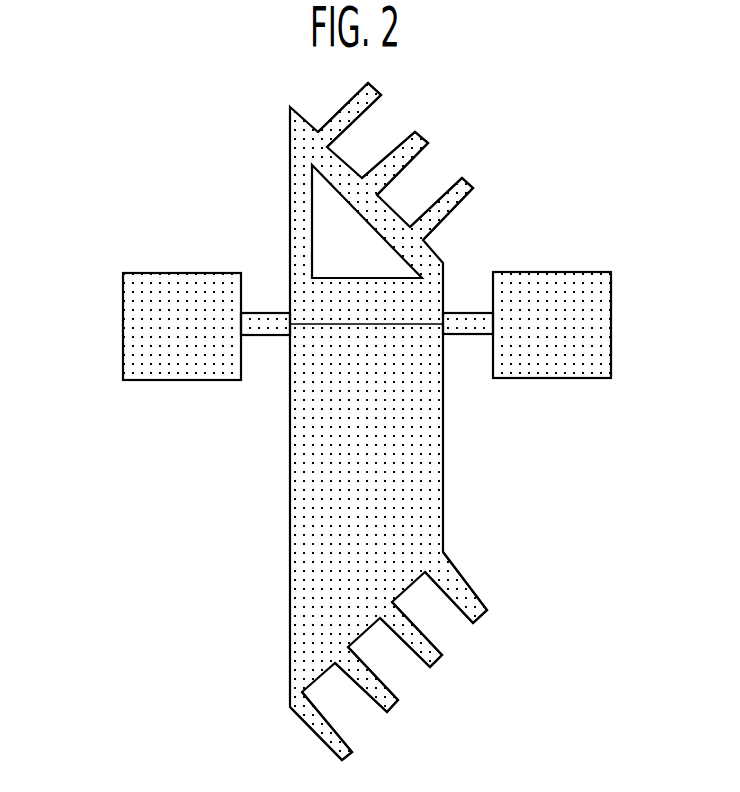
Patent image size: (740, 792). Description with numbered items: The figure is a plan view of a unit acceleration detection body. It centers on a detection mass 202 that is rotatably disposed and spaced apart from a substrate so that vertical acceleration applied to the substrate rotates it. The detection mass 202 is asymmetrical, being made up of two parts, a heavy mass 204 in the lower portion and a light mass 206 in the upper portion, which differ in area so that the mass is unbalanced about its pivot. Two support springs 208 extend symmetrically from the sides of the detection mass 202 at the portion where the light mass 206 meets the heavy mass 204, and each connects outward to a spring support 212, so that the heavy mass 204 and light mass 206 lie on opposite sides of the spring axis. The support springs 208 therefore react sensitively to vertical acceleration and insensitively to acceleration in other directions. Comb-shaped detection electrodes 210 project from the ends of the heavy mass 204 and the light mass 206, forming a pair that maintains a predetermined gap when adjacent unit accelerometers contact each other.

The detection mass 202 is at (280, 447).
The heavy mass 204 is at (288, 545).
The light mass 206 is at (290, 184).
The support spring 208 is at (263, 303).
The detection electrodes 210 is at (478, 172).
The spring support 212 is at (124, 352).